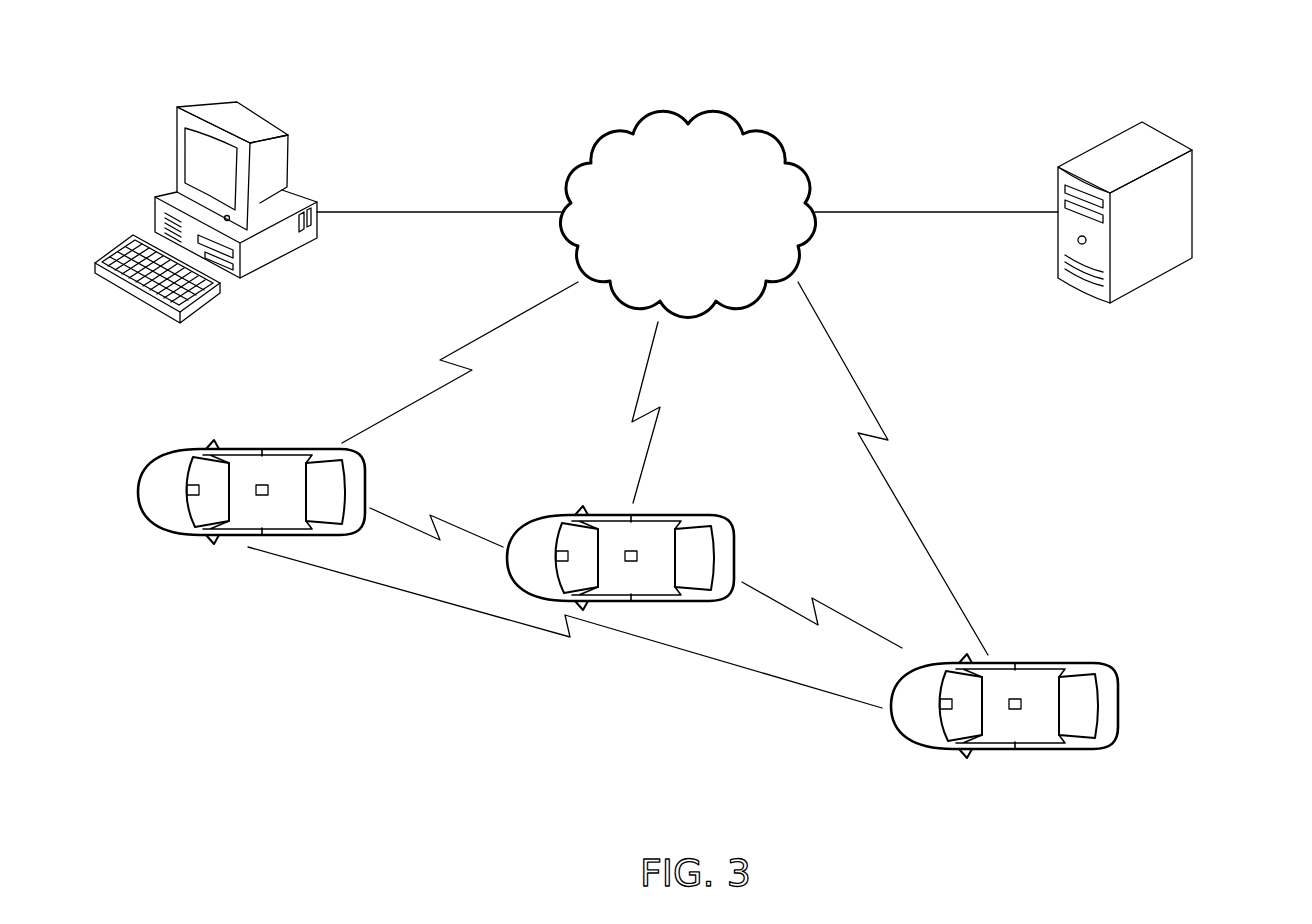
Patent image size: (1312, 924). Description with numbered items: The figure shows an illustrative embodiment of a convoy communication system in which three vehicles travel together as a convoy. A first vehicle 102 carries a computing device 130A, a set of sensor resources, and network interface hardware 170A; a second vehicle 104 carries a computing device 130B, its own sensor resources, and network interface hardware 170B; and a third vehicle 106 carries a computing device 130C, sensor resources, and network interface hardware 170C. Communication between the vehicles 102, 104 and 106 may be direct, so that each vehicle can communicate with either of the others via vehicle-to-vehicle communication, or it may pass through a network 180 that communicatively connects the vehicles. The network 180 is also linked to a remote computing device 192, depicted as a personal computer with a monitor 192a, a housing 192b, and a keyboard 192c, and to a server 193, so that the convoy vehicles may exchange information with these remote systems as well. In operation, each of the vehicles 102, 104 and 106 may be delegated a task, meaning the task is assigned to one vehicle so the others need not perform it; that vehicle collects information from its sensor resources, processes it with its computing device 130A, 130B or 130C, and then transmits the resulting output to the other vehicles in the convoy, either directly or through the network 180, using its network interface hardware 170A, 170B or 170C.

The remote computing device 192 is at (300, 103).
The display monitor 192a is at (170, 120).
The computer housing 192b is at (272, 264).
The keyboard 192c is at (197, 312).
The server 193 is at (1220, 163).
The network 180 is at (776, 140).
The first vehicle 102 is at (366, 476).
The second vehicle 104 is at (735, 548).
The third vehicle 106 is at (1120, 704).
The computing device 130A is at (193, 485).
The computing device 130B is at (562, 551).
The computing device 130C is at (946, 710).
The network interface hardware 170A is at (262, 485).
The network interface hardware 170B is at (631, 551).
The network interface hardware 170C is at (1016, 699).